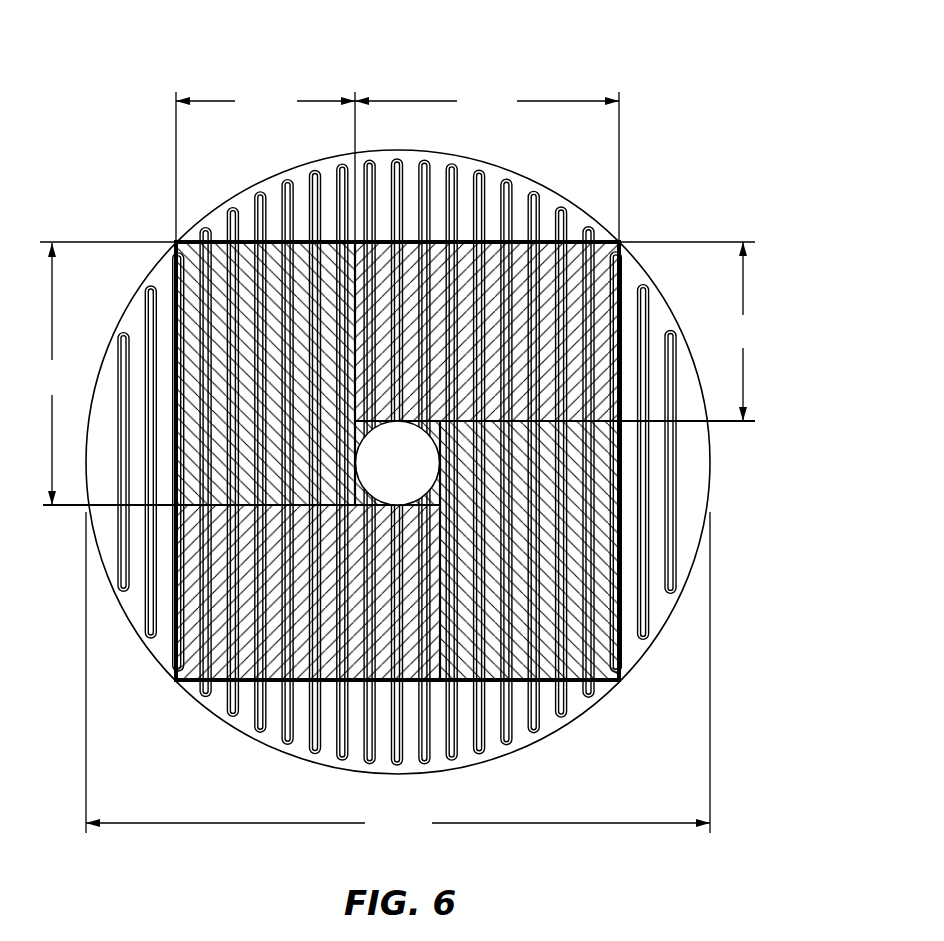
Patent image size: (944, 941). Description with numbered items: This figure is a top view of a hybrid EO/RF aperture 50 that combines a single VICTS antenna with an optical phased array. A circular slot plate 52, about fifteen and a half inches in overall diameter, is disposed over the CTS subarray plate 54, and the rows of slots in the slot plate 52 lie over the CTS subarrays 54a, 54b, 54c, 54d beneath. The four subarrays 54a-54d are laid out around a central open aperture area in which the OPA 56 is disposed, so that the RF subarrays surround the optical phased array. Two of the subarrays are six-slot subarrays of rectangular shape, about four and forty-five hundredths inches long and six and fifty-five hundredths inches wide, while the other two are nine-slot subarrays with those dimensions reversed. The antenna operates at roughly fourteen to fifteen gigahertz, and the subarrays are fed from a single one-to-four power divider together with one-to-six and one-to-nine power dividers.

The hybrid EO/RF aperture 50 is at (407, 416).
The slot plate 52 is at (724, 460).
The CTS subarray plate 54 is at (403, 453).
The CTS subarray 54a is at (176, 242).
The CTS subarray 54b is at (619, 242).
The CTS subarray 54c is at (601, 680).
The CTS subarray 54d is at (192, 674).
The OPA 56 is at (386, 475).